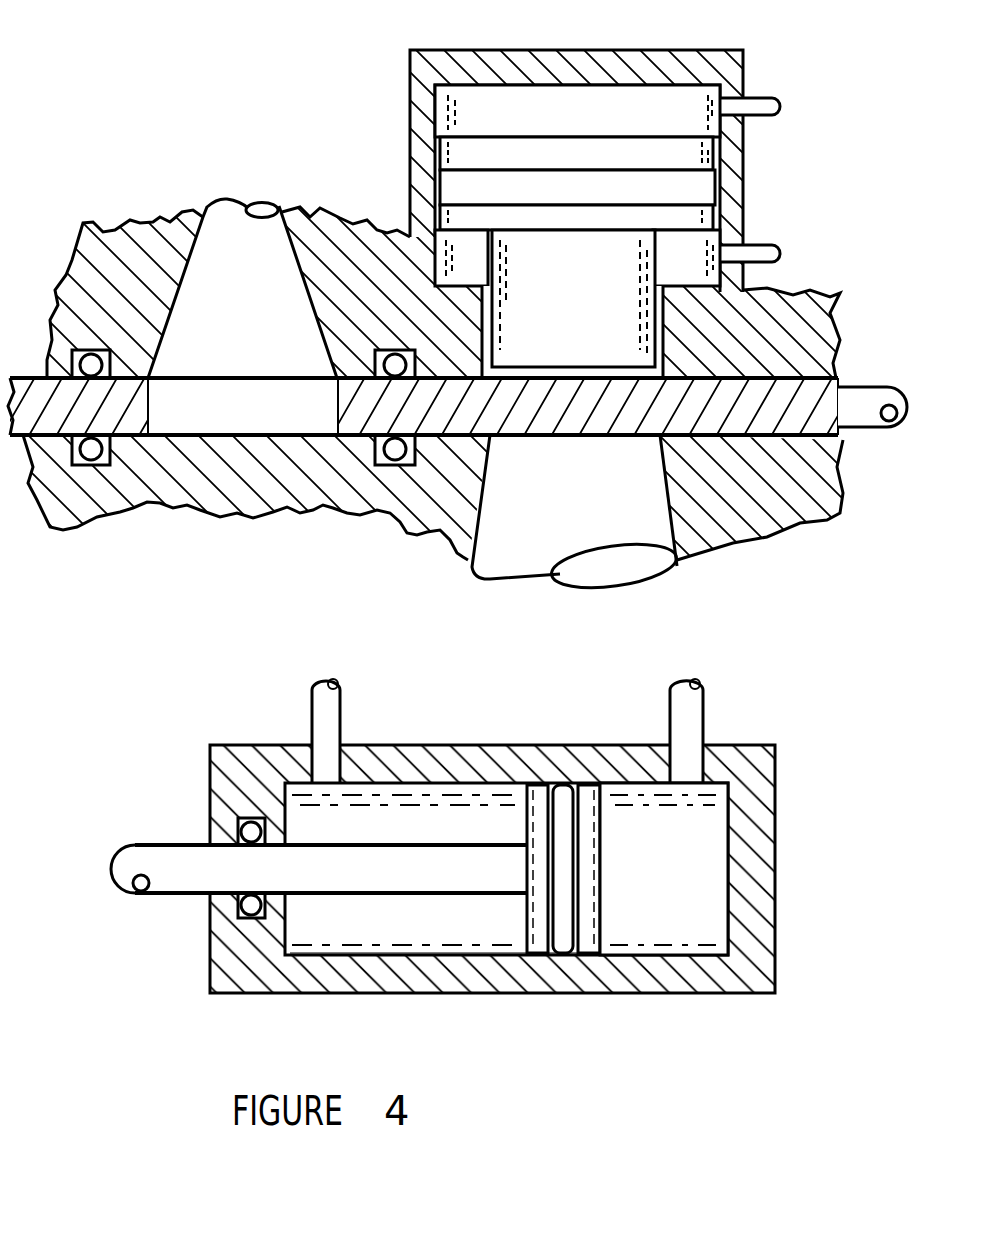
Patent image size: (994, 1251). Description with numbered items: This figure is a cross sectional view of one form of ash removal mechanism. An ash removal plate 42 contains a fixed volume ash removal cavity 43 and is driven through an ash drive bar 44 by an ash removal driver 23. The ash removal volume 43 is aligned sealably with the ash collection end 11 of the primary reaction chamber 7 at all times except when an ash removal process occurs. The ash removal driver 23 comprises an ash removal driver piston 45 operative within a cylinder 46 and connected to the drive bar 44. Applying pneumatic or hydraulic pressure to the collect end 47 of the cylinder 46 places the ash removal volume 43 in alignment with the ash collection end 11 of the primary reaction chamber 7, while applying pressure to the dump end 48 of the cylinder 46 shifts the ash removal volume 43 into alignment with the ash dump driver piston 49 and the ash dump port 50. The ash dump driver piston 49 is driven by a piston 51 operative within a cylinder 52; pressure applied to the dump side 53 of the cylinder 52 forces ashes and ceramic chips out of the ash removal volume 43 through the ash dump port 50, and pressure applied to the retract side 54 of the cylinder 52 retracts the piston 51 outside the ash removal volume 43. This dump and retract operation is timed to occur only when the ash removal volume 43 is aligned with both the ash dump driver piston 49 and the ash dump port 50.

The primary reaction chamber 7 is at (267, 250).
The ash collection end 11 is at (265, 360).
The ash removal driver 23 is at (748, 882).
The ash removal plate 42 is at (390, 418).
The ash removal cavity 43 is at (222, 420).
The ash drive bar 44 is at (858, 416).
The ash removal driver piston 45 is at (563, 890).
The cylinder 46 is at (478, 960).
The collect end 47 is at (683, 930).
The dump end 48 is at (347, 927).
The ash dump driver piston 49 is at (605, 337).
The ash dump port 50 is at (597, 498).
The piston 51 is at (583, 190).
The cylinder 52 is at (428, 118).
The dump side 53 is at (523, 108).
The retract side 54 is at (682, 260).